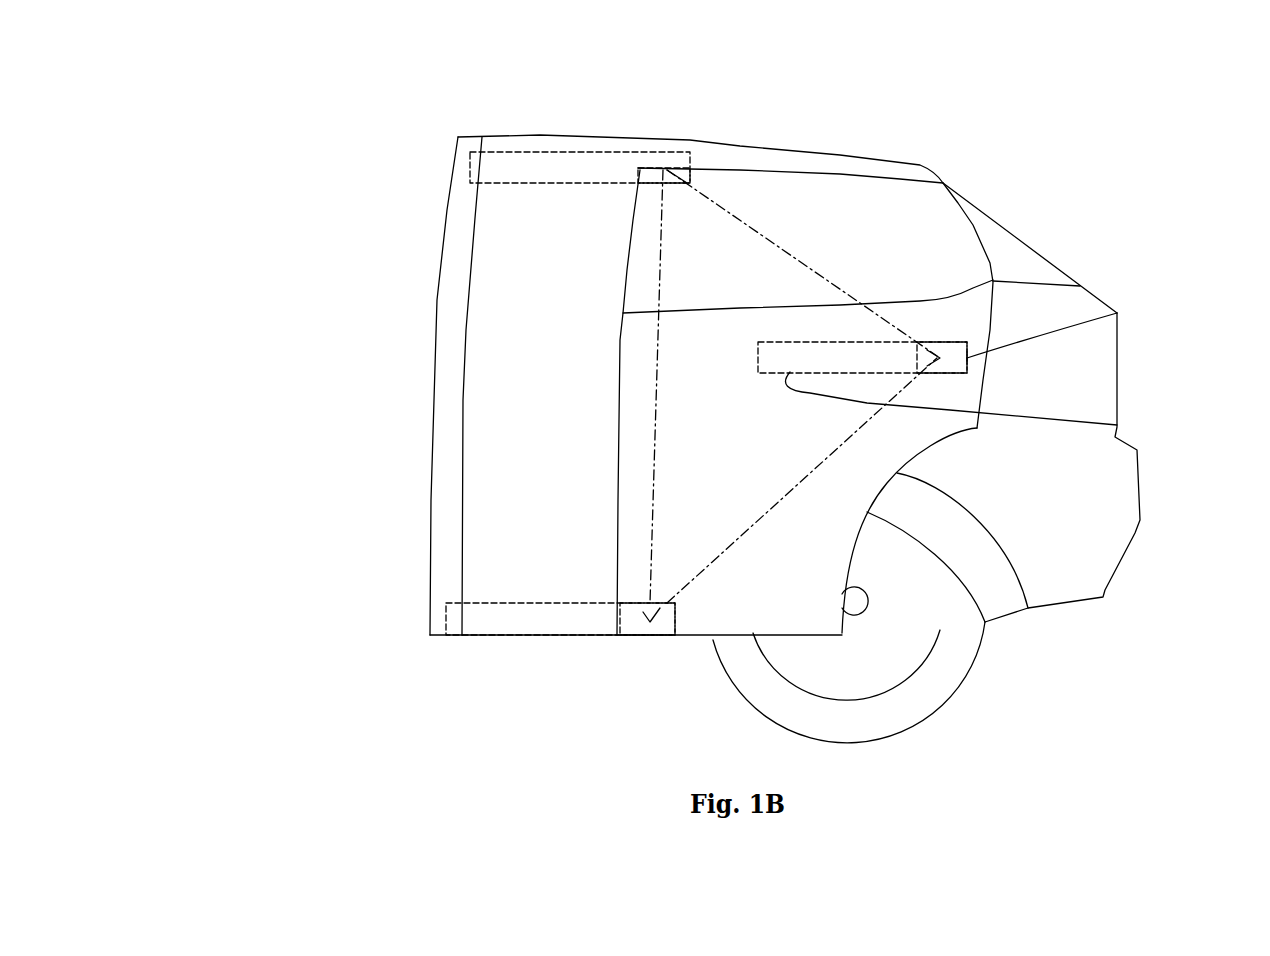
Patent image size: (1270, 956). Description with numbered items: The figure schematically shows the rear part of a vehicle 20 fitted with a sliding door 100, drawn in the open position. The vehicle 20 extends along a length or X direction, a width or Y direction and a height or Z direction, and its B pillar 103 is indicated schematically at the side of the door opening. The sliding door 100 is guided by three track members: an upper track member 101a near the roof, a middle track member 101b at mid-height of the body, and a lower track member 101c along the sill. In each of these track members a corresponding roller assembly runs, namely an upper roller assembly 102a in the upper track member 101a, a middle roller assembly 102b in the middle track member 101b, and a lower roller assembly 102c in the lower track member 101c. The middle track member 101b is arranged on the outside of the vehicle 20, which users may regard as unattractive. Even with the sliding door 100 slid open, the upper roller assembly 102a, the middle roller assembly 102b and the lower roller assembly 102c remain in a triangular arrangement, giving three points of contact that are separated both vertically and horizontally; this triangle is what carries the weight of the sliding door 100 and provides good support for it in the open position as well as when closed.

The vehicle 20 is at (262, 131).
The sliding door 100 is at (623, 273).
The B pillar 103 is at (448, 417).
The upper track member 101a is at (620, 152).
The upper roller assembly 102a is at (680, 155).
The middle track member 101b is at (1117, 313).
The middle roller assembly 102b is at (1117, 426).
The lower track member 101c is at (538, 635).
The lower roller assembly 102c is at (643, 635).